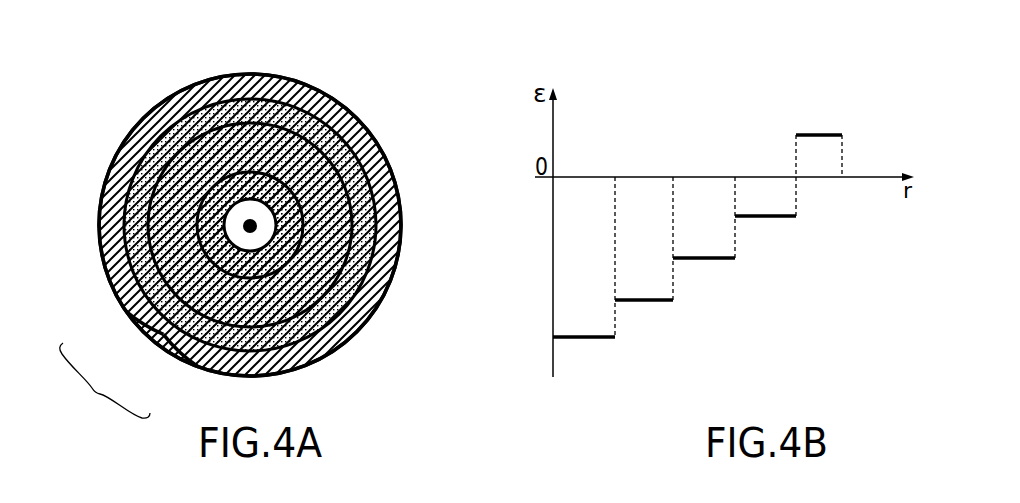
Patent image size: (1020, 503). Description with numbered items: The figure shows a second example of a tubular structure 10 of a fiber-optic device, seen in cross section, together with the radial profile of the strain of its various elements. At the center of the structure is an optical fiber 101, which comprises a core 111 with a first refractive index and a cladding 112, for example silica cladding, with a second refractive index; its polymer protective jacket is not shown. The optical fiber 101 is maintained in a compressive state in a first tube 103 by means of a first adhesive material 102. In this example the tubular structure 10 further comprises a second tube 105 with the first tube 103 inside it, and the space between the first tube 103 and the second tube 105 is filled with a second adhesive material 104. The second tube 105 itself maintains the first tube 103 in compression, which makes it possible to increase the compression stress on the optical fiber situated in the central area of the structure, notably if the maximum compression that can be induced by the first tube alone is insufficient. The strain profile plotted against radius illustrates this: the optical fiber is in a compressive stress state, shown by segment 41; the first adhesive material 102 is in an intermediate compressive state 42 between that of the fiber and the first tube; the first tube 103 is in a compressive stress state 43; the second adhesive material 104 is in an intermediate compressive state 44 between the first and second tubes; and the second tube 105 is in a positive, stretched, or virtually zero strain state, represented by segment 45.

In FIG. 4A, the tubular structure 10 is at (92, 63).
In FIG. 4A, the optical fiber 101 is at (89, 400).
In FIG. 4A, the first adhesive material 102 is at (285, 238).
In FIG. 4A, the first tube 103 is at (307, 173).
In FIG. 4A, the second adhesive material 104 is at (230, 118).
In FIG. 4A, the second tube 105 is at (305, 90).
In FIG. 4A, the core 111 is at (145, 332).
In FIG. 4A, the cladding 112 is at (173, 358).
In FIG. 4B, the strain state of the optical fiber 41 is at (593, 341).
In FIG. 4B, the strain state of the first adhesive material 42 is at (648, 303).
In FIG. 4B, the strain state of the first tube 43 is at (707, 262).
In FIG. 4B, the strain state of the second adhesive material 44 is at (767, 220).
In FIG. 4B, the strain state of the second tube 45 is at (820, 133).